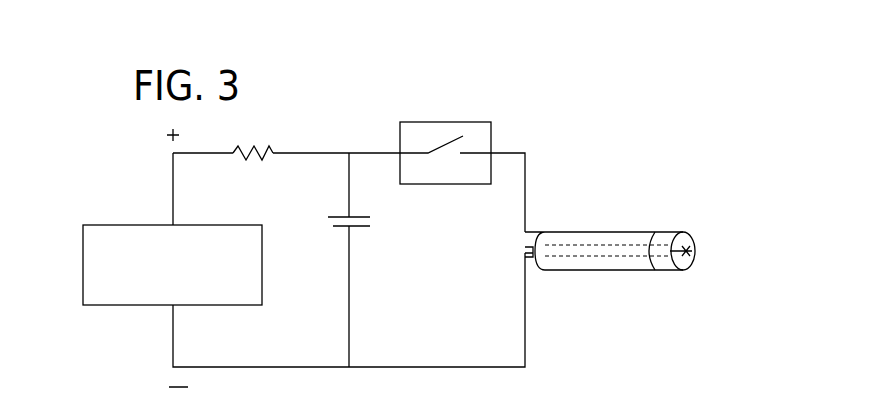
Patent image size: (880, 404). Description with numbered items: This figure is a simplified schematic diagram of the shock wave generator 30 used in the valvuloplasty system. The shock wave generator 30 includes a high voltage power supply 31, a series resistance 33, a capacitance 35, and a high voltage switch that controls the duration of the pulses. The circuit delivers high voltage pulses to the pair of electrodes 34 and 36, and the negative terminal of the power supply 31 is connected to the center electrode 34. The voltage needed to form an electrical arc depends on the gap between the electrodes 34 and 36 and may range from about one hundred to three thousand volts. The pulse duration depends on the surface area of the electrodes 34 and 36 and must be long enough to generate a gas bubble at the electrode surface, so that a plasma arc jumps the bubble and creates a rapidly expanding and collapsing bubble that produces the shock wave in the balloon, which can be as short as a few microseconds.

The shock wave generator 30 is at (546, 187).
The high voltage power supply 31 is at (123, 224).
The series resistance 33 is at (248, 144).
The center electrode 34 is at (688, 254).
The capacitance 35 is at (365, 226).
The electrode 36 is at (673, 231).